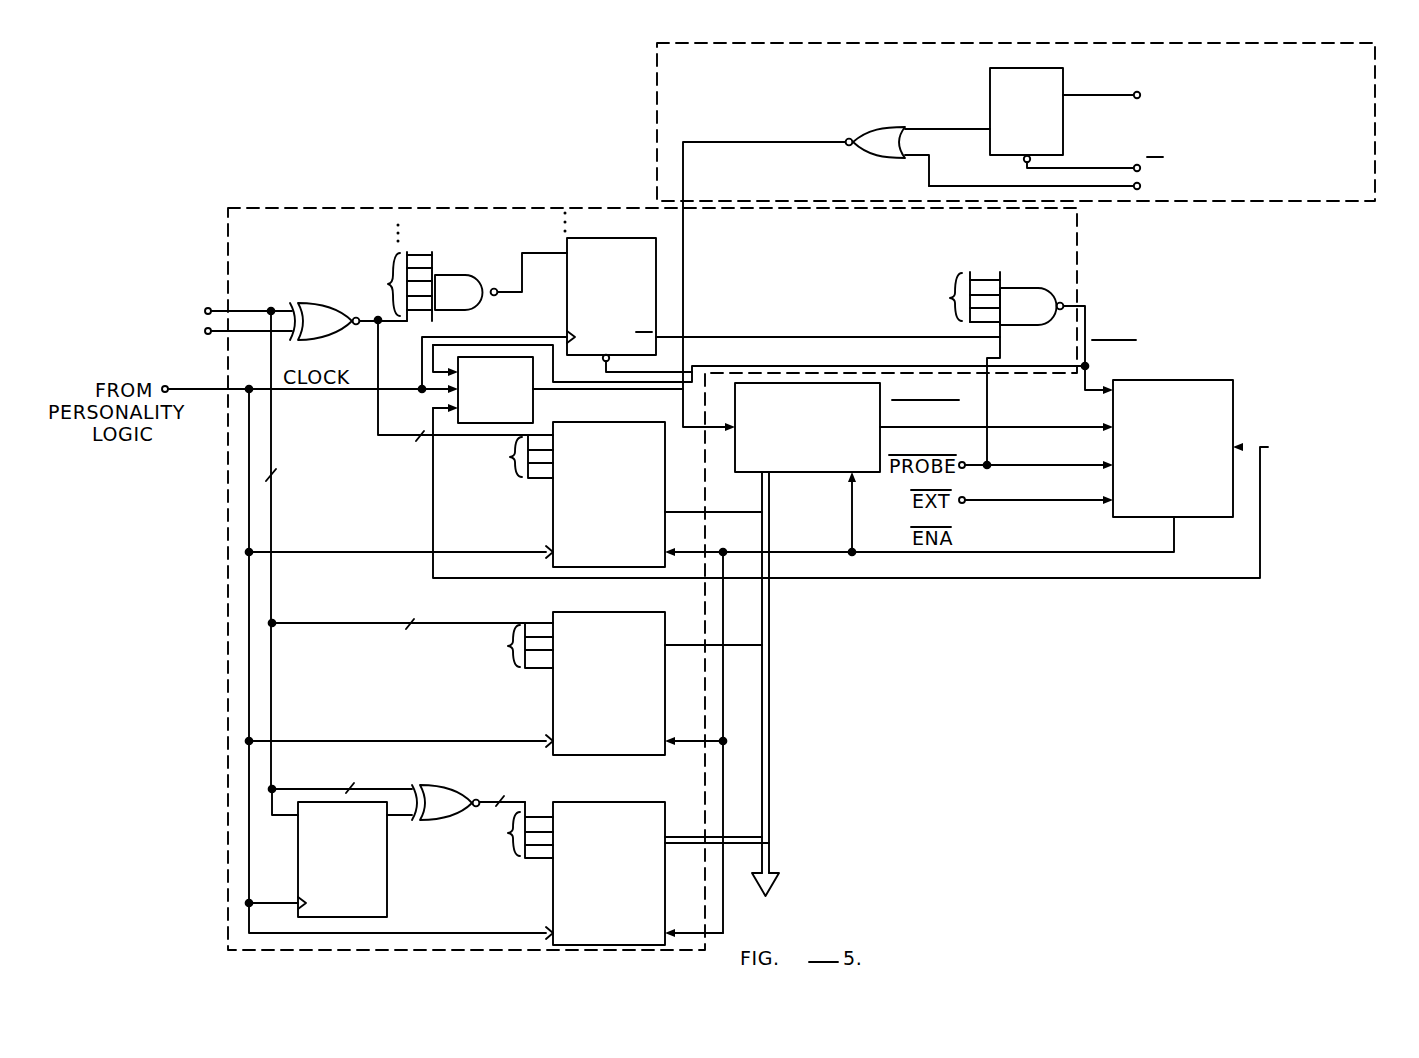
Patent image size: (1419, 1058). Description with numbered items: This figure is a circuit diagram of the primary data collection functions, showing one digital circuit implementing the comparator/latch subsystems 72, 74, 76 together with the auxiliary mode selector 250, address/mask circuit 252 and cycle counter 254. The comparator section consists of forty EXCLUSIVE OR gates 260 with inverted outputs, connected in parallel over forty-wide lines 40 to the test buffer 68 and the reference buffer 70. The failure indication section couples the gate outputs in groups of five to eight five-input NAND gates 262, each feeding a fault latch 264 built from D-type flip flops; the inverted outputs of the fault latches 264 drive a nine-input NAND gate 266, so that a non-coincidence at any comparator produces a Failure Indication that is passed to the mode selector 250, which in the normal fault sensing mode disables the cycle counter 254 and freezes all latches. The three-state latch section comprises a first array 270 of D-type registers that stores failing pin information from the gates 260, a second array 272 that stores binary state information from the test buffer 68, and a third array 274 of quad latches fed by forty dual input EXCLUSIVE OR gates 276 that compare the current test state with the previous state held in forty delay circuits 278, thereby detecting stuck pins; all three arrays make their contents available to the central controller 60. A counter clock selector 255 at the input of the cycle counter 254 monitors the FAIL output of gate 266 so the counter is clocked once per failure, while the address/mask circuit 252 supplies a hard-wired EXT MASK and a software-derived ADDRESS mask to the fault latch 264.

The address/mask circuit 252 is at (656, 134).
The comparator/latch subsystem 72 is at (652, 566).
The comparator/latch subsystem 74 is at (652, 566).
The comparator/latch subsystem 76 is at (372, 207).
The test buffer 68 is at (216, 302).
The reference buffer 70 is at (216, 342).
The forty parallel lines 40 is at (416, 606).
The EXCLUSIVE OR gates 260 is at (311, 300).
The five-input NAND gates 262 is at (447, 274).
The fault latch 264 is at (758, 293).
The counter clock selector 255 is at (455, 400).
The first array of D-type registers 270 is at (553, 518).
The cycle counter 254 is at (880, 385).
The central controller 60 is at (832, 907).
The nine-input NAND gate 266 is at (1012, 288).
The mode selector 250 is at (1205, 380).
The second array of D-type registers 272 is at (553, 612).
The third array of quad latches 274 is at (553, 802).
The dual input EXCLUSIVE OR gates 276 is at (472, 788).
The delay circuits 278 is at (387, 873).